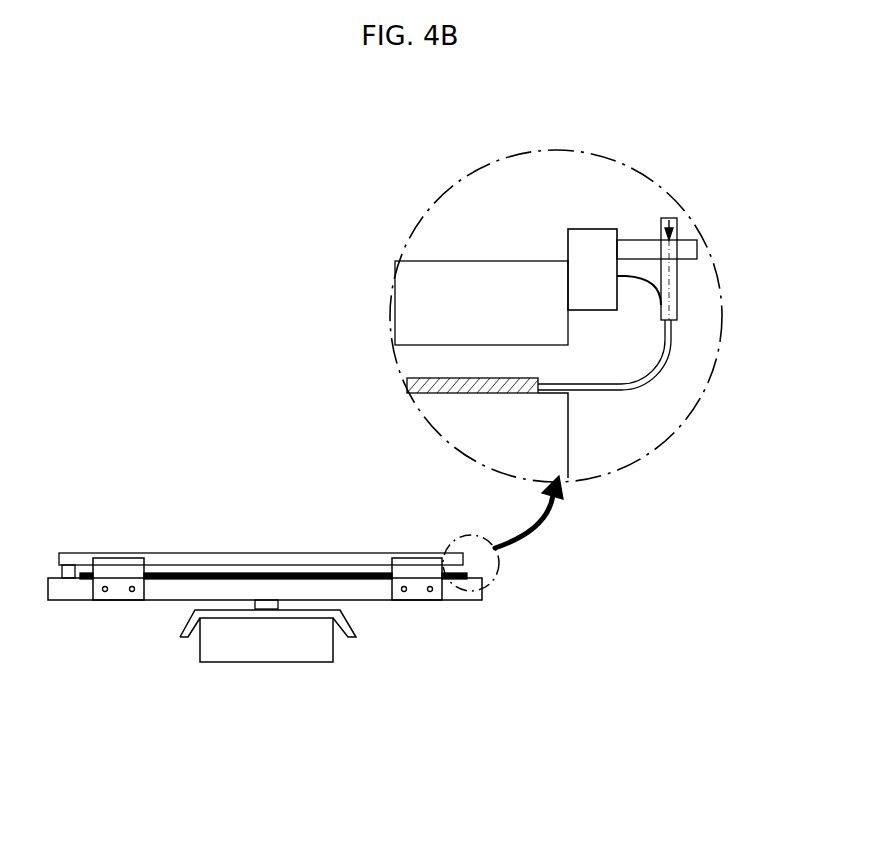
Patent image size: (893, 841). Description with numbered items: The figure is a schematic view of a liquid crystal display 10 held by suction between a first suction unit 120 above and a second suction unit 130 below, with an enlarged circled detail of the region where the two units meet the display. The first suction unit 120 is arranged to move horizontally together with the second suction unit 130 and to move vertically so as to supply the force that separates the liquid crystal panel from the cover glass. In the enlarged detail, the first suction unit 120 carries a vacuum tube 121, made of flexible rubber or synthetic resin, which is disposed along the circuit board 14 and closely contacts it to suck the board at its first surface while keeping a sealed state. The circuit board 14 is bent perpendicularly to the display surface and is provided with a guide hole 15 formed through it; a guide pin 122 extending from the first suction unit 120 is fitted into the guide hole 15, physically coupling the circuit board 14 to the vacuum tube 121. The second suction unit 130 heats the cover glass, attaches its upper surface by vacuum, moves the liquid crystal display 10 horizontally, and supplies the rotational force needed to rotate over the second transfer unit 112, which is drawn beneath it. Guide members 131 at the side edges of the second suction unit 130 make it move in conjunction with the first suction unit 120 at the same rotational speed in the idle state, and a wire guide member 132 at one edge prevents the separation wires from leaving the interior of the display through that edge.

The liquid crystal display 10 is at (420, 382).
The circuit board 14 is at (670, 303).
The guide hole 15 is at (668, 216).
The second transfer unit 112 is at (267, 645).
The first suction unit 120 is at (480, 261).
The vacuum tube 121 is at (635, 268).
The guide pin 122 is at (686, 250).
The second suction unit 130 is at (570, 437).
The guide member 131 is at (120, 585).
The wire guide member 132 is at (68, 573).